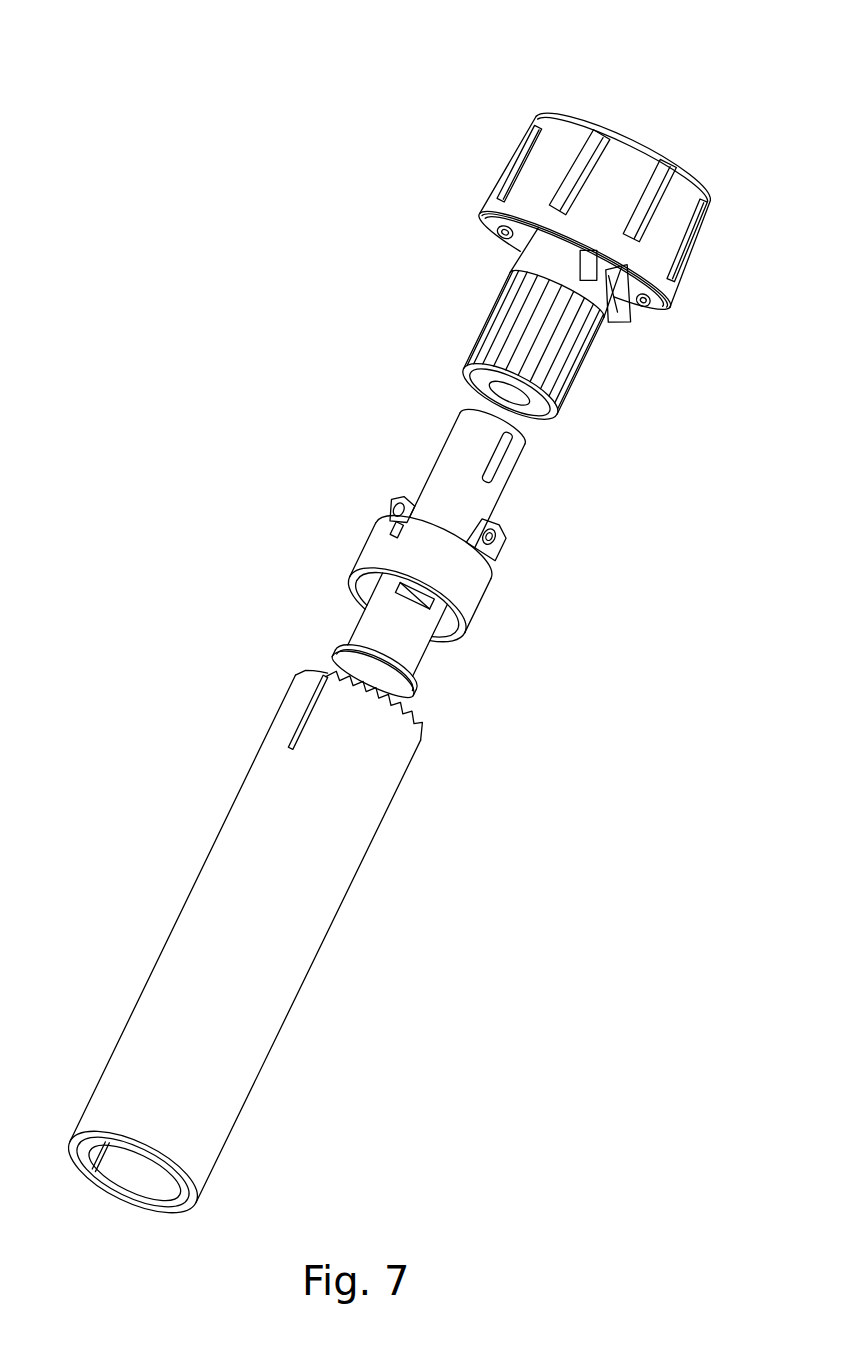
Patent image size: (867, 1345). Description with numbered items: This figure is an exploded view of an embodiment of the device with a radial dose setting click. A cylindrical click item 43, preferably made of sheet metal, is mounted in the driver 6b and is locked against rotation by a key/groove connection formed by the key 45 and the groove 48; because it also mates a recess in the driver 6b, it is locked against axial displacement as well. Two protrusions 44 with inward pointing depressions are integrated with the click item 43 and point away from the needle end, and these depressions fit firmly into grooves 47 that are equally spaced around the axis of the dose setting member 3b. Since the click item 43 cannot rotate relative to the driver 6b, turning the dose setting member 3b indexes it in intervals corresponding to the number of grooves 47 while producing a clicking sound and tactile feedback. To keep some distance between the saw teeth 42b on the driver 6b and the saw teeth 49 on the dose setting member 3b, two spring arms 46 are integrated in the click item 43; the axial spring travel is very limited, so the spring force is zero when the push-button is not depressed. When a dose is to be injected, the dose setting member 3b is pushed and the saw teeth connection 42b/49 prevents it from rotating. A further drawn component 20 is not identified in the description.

The dose setting member 3b is at (629, 100).
The driver 6b is at (352, 975).
The locking plate 20 is at (627, 297).
The saw teeth 42b is at (420, 722).
The click item 43 is at (323, 548).
The protrusions 44 is at (500, 547).
The key 45 is at (395, 550).
The spring arms 46 is at (408, 600).
The grooves 47 is at (490, 342).
The groove 48 is at (300, 728).
The saw teeth 49 is at (577, 288).